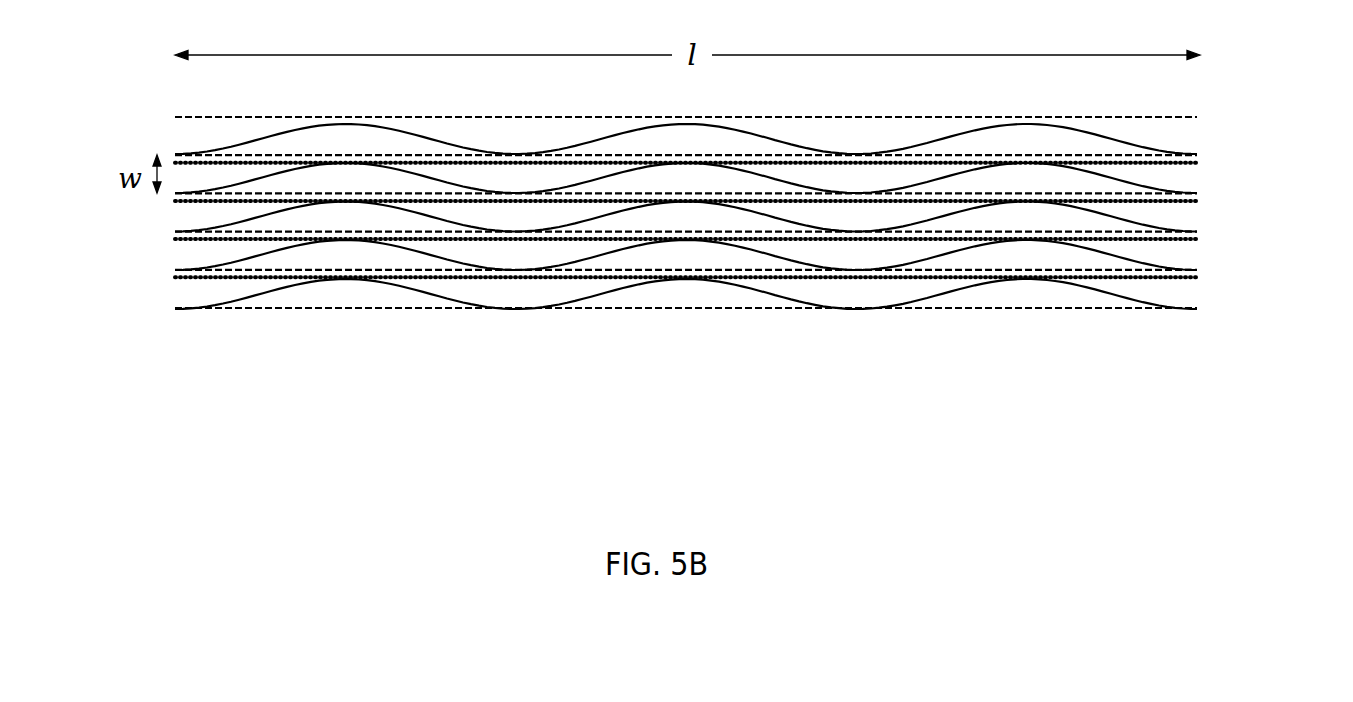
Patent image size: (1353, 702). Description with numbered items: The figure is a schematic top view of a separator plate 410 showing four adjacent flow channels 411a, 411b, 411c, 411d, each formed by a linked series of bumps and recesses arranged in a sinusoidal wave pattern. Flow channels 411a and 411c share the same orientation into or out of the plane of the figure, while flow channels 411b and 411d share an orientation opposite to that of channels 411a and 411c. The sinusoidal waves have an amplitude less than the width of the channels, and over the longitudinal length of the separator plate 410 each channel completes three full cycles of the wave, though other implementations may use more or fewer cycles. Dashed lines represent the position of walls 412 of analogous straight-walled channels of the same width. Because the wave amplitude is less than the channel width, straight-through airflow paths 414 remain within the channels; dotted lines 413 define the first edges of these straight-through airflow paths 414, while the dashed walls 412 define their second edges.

The separator plate 410 is at (708, 358).
The flow channel 411a is at (1200, 175).
The flow channel 411b is at (1193, 215).
The flow channel 411c is at (1198, 253).
The flow channel 411d is at (1197, 297).
The walls 412 is at (267, 192).
The dotted lines 413 is at (180, 202).
The straight-through airflow paths 414 is at (395, 235).